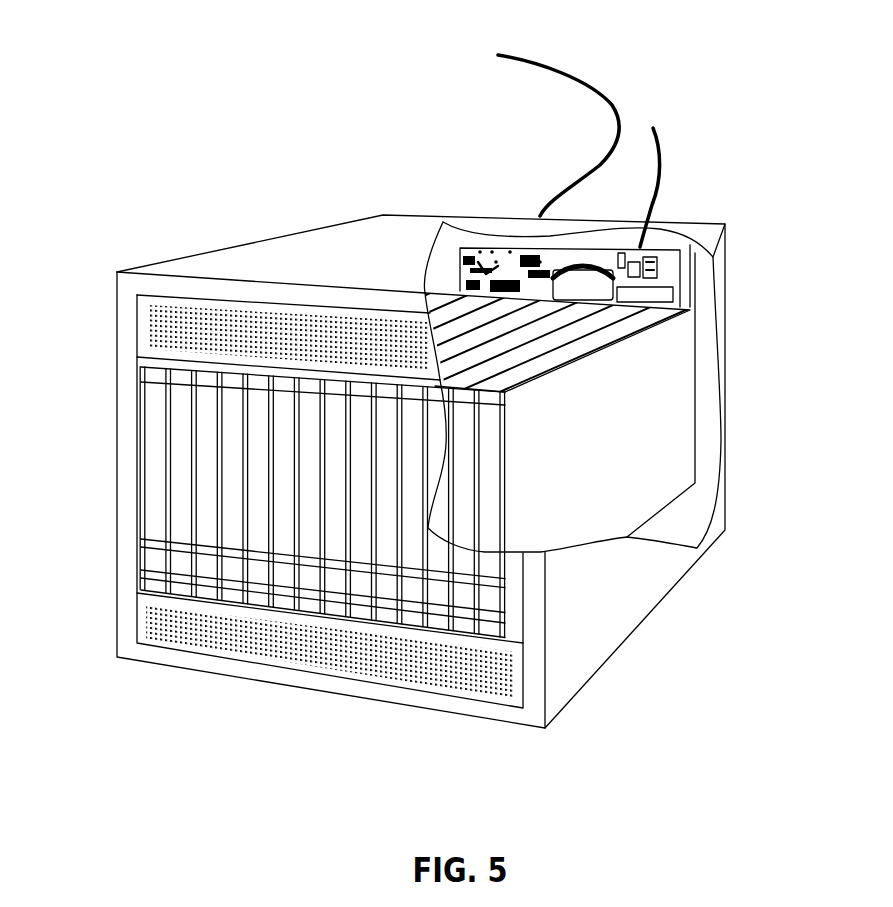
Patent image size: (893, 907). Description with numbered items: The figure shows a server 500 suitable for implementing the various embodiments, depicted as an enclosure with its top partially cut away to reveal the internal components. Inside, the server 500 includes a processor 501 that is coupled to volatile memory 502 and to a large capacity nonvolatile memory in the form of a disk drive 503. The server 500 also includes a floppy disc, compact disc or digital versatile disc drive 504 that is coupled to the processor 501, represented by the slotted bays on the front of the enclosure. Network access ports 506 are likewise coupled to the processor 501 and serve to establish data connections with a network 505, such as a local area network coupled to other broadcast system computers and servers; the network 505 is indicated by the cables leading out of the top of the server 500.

The server 500 is at (303, 233).
The processor 501 is at (460, 290).
The volatile memory 502 is at (683, 257).
The disk drive 503 is at (205, 433).
The disc drive 504 is at (178, 468).
The network 505 is at (623, 117).
The network access ports 506 is at (583, 278).